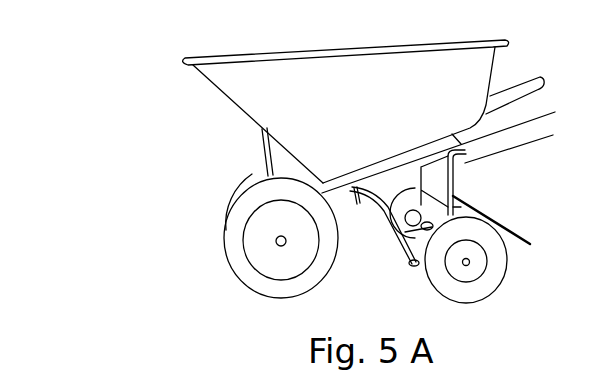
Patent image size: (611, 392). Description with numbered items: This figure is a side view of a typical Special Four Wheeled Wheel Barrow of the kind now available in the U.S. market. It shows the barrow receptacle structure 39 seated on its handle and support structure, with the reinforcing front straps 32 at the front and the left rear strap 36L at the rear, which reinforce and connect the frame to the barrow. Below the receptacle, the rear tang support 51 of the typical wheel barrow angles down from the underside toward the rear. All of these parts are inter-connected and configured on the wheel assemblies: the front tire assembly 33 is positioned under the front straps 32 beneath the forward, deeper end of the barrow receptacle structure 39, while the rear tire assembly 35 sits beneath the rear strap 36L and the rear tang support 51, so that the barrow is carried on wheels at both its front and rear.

The barrow receptacle structure 39 is at (248, 88).
The front straps 32 is at (262, 159).
The front tire assembly 33 is at (237, 250).
The rear tang support 51 is at (397, 238).
The rear tire assembly 35 is at (473, 285).
The rear strap 36L is at (518, 228).